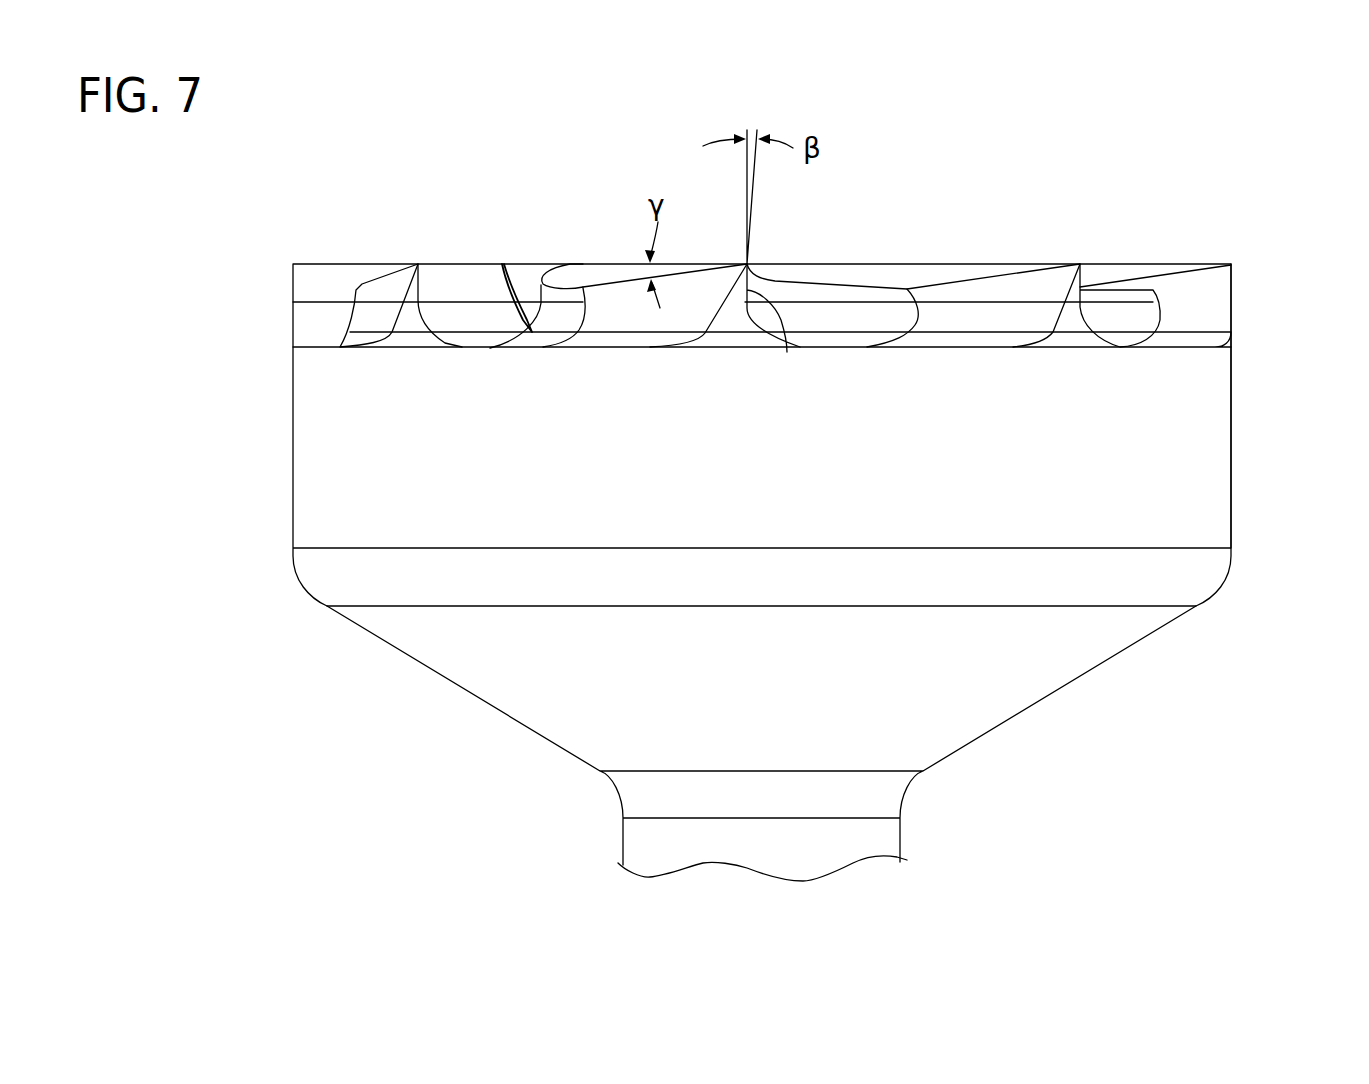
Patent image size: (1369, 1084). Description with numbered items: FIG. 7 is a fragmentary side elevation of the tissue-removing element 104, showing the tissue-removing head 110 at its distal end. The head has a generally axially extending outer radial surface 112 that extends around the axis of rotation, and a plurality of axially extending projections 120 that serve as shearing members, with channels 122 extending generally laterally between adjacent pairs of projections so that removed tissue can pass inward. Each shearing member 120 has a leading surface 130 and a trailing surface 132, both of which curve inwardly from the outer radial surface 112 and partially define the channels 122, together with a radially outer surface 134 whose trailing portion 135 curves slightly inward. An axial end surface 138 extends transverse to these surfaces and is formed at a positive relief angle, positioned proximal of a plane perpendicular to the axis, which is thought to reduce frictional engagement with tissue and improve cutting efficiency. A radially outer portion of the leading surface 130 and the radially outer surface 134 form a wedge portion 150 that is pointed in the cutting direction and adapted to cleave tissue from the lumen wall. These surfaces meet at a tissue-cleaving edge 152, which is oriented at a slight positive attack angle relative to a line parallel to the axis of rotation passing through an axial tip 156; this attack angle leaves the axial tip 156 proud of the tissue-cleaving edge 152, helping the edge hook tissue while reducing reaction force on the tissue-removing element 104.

The tissue-removing element 104 is at (345, 873).
The tissue-removing head 110 is at (225, 605).
The outer radial surface 112 is at (1180, 482).
The projection 120 is at (598, 253).
The channel 122 is at (501, 312).
The leading surface 130 is at (438, 285).
The trailing surface 132 is at (560, 312).
The radially outer surface 134 is at (730, 320).
The trailing portion 135 is at (630, 308).
The axial end surface 138 is at (887, 277).
The wedge portion 150 is at (1086, 277).
The tissue-cleaving edge 152 is at (787, 352).
The axial tip 156 is at (747, 264).